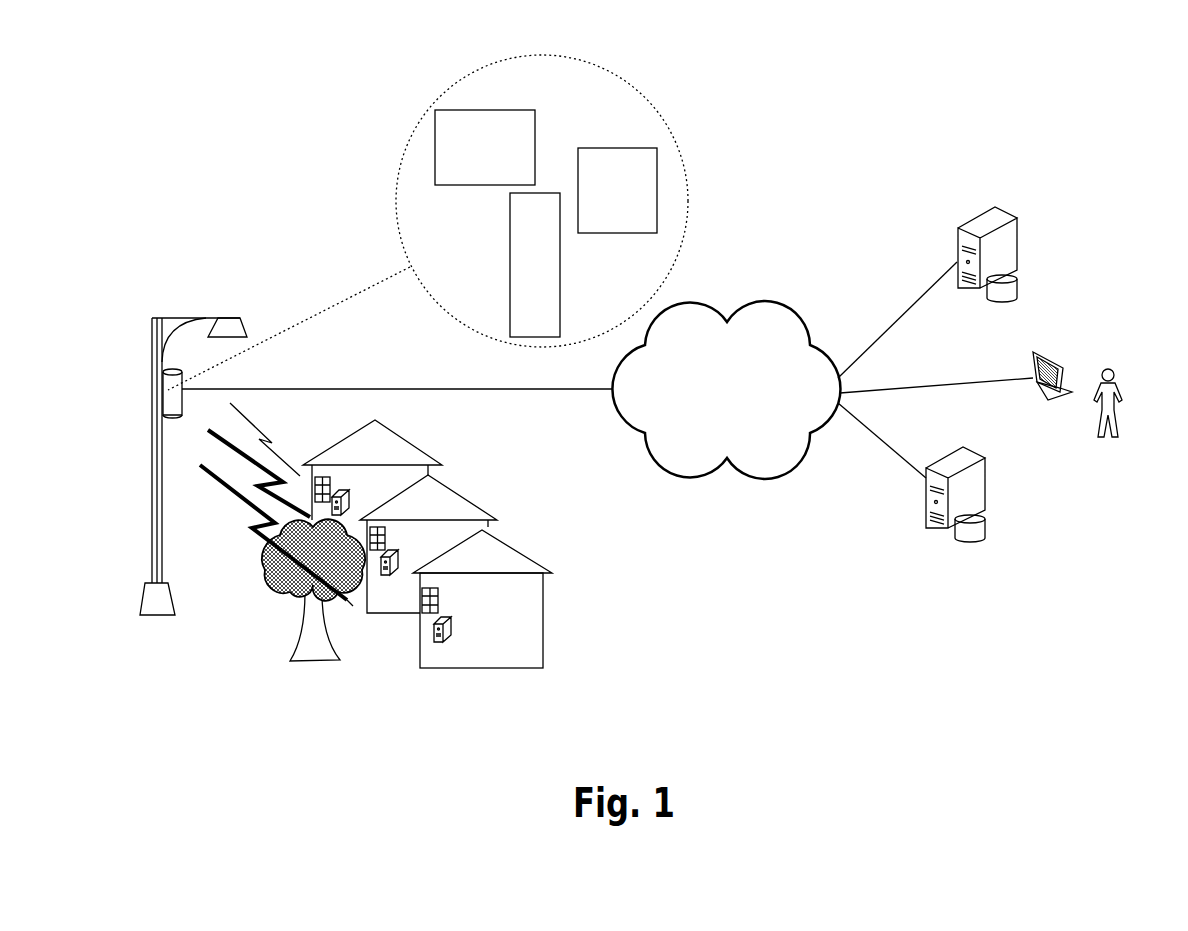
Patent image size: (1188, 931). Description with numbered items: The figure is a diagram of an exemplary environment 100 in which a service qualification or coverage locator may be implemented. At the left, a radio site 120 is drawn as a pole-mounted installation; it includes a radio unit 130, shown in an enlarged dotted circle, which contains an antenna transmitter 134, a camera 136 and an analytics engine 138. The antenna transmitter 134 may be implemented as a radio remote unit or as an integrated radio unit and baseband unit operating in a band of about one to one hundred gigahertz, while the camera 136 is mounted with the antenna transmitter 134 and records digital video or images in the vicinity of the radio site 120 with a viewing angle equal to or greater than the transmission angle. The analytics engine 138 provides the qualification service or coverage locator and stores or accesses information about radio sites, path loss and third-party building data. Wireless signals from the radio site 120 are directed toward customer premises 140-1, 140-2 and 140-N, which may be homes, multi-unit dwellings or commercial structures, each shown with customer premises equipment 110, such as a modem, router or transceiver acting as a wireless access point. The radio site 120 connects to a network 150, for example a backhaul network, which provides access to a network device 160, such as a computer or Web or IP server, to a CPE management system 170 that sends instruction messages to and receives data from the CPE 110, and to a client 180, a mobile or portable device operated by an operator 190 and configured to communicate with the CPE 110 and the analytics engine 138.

The environment 100 is at (261, 96).
The customer premises equipment 110 is at (349, 494).
The radio site 120 is at (188, 503).
The radio unit 130 is at (405, 160).
The antenna transmitter 134 is at (517, 255).
The camera 136 is at (471, 158).
The analytics engine 138 is at (600, 203).
The customer premises 140-1 is at (412, 444).
The customer premises 140-2 is at (467, 494).
The customer premises 140-N is at (520, 552).
The network 150 is at (705, 399).
The network device 160 is at (1022, 224).
The CPE management system 170 is at (990, 458).
The client 180 is at (1030, 357).
The operator 190 is at (1115, 372).